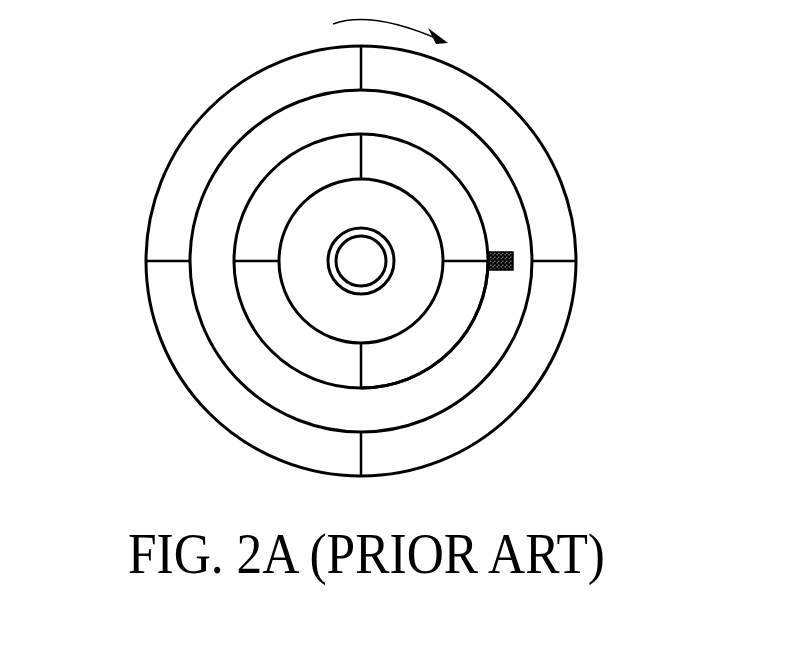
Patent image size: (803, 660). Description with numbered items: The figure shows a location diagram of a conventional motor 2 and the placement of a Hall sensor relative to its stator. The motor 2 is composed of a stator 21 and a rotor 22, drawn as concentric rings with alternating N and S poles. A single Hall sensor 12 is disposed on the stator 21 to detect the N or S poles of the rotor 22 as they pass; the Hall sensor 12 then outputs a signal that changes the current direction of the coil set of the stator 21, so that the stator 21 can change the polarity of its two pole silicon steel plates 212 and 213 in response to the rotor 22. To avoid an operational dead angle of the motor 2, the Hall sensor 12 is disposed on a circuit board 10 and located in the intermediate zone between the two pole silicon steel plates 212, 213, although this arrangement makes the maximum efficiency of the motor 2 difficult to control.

The conventional motor 2 is at (62, 60).
The circuit board 10 is at (493, 200).
The Hall sensor 12 is at (513, 253).
The stator 21 is at (345, 222).
The rotor 22 is at (158, 336).
The silicon steel plate 212 is at (425, 148).
The silicon steel plate 213 is at (480, 310).